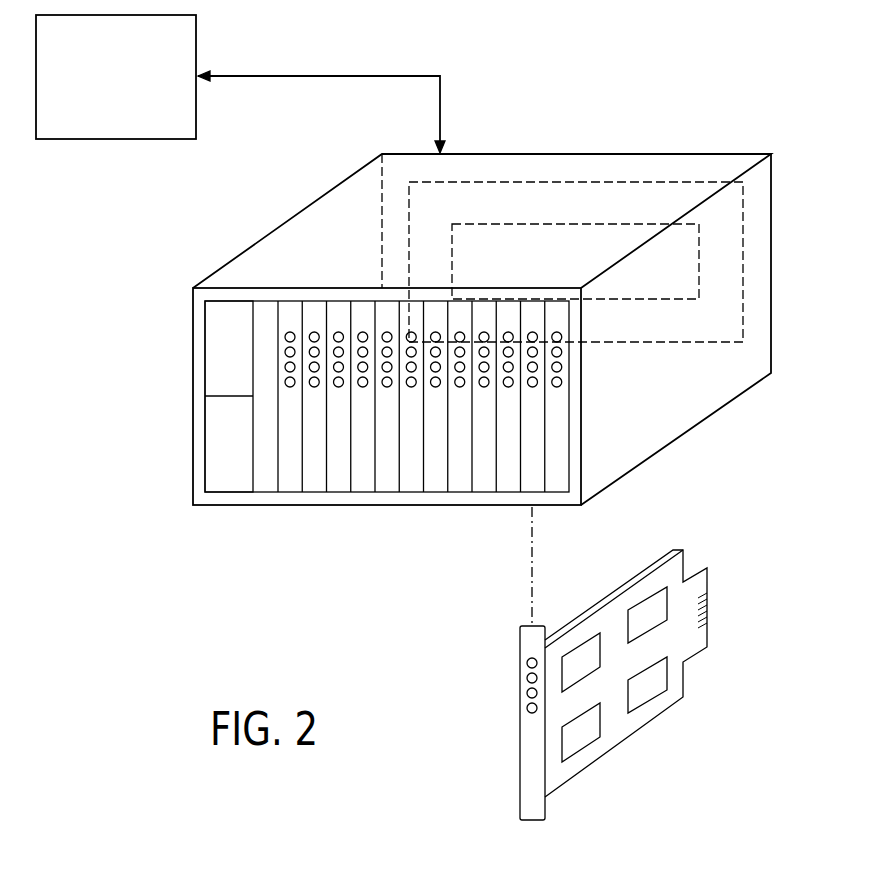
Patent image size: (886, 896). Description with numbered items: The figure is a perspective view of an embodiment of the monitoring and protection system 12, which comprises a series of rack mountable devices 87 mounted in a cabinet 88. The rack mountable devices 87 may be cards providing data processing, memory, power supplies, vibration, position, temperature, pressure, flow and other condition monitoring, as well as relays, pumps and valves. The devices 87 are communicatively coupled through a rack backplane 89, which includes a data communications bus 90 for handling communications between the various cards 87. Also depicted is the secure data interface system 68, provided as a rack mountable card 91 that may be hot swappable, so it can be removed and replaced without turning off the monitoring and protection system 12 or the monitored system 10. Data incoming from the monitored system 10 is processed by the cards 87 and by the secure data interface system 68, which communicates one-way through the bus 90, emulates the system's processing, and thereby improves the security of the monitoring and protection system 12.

The monitored system 10 is at (100, 91).
The monitoring and protection system 12 is at (193, 288).
The secure data interface system 68 is at (528, 470).
The rack mountable devices 87 is at (287, 480).
The cabinet 88 is at (229, 493).
The rack backplane 89 is at (578, 182).
The data communications bus 90 is at (610, 224).
The rack mountable card 91 is at (613, 598).